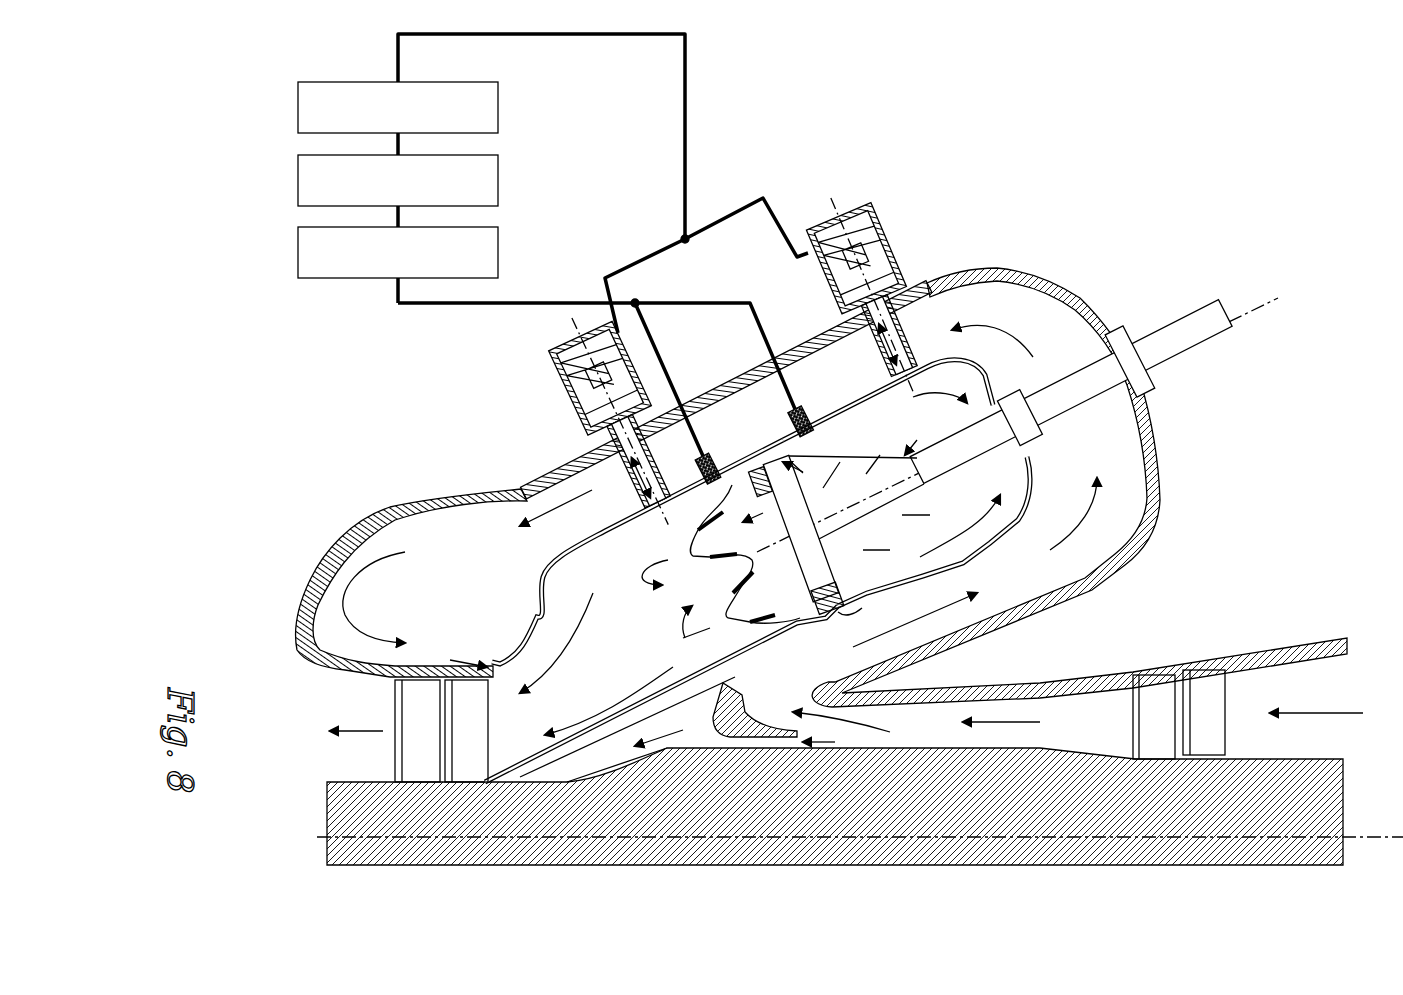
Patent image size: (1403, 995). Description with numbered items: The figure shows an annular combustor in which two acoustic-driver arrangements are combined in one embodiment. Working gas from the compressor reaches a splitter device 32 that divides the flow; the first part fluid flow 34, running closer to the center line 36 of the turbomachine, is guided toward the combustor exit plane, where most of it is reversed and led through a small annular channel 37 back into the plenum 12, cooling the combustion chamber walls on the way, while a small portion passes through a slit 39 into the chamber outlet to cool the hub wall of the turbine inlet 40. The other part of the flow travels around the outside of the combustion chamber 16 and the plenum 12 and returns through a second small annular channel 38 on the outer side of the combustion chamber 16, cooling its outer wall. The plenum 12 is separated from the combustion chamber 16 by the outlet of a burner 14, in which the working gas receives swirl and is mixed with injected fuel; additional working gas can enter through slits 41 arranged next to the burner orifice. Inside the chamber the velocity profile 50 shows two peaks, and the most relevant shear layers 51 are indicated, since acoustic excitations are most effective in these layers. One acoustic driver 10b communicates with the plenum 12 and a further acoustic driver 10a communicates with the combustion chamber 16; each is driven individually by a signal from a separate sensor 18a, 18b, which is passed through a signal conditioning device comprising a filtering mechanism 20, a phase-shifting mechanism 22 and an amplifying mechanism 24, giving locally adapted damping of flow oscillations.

The acoustic driver 10a is at (572, 340).
The acoustic driver 10b is at (842, 210).
The plenum 12 is at (963, 520).
The burner 14 is at (840, 530).
The combustion chamber 16 is at (1153, 697).
The sensor 18a is at (742, 444).
The sensor 18b is at (805, 414).
The mechanism for filtering the signal 20 is at (500, 253).
The mechanism for phase-shifting the signal 22 is at (500, 180).
The mechanism for amplifying the signal 24 is at (500, 107).
The splitter device 32 is at (760, 747).
The first part fluid flow 34 is at (660, 749).
The center line 36 is at (997, 842).
The small annular channel 37 is at (573, 778).
The second small annular channel 38 is at (543, 577).
The slit 39 is at (477, 735).
The turbine inlet / orifice of the burner 40 is at (796, 565).
The slits 41 is at (862, 611).
The velocity profile 50 is at (730, 622).
The shear layers 51 is at (698, 526).